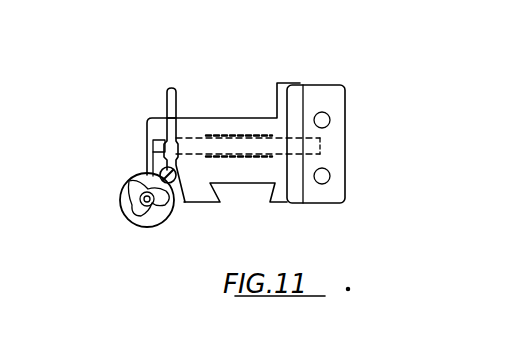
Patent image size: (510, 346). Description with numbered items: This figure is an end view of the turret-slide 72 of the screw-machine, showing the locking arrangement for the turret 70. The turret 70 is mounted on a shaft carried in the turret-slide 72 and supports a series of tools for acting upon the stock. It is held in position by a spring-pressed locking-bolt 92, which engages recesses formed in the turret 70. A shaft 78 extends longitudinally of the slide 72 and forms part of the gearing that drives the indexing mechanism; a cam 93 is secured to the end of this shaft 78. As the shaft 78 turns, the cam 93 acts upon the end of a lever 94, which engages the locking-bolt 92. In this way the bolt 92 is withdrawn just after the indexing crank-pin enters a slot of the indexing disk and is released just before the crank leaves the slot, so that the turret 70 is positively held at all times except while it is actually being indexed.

The turret 70 is at (333, 93).
The turret-slide 72 is at (267, 168).
The spring-pressed locking-bolt 92 is at (232, 140).
The lever 94 is at (172, 142).
The cam 93 is at (142, 183).
The shaft 78 is at (138, 203).